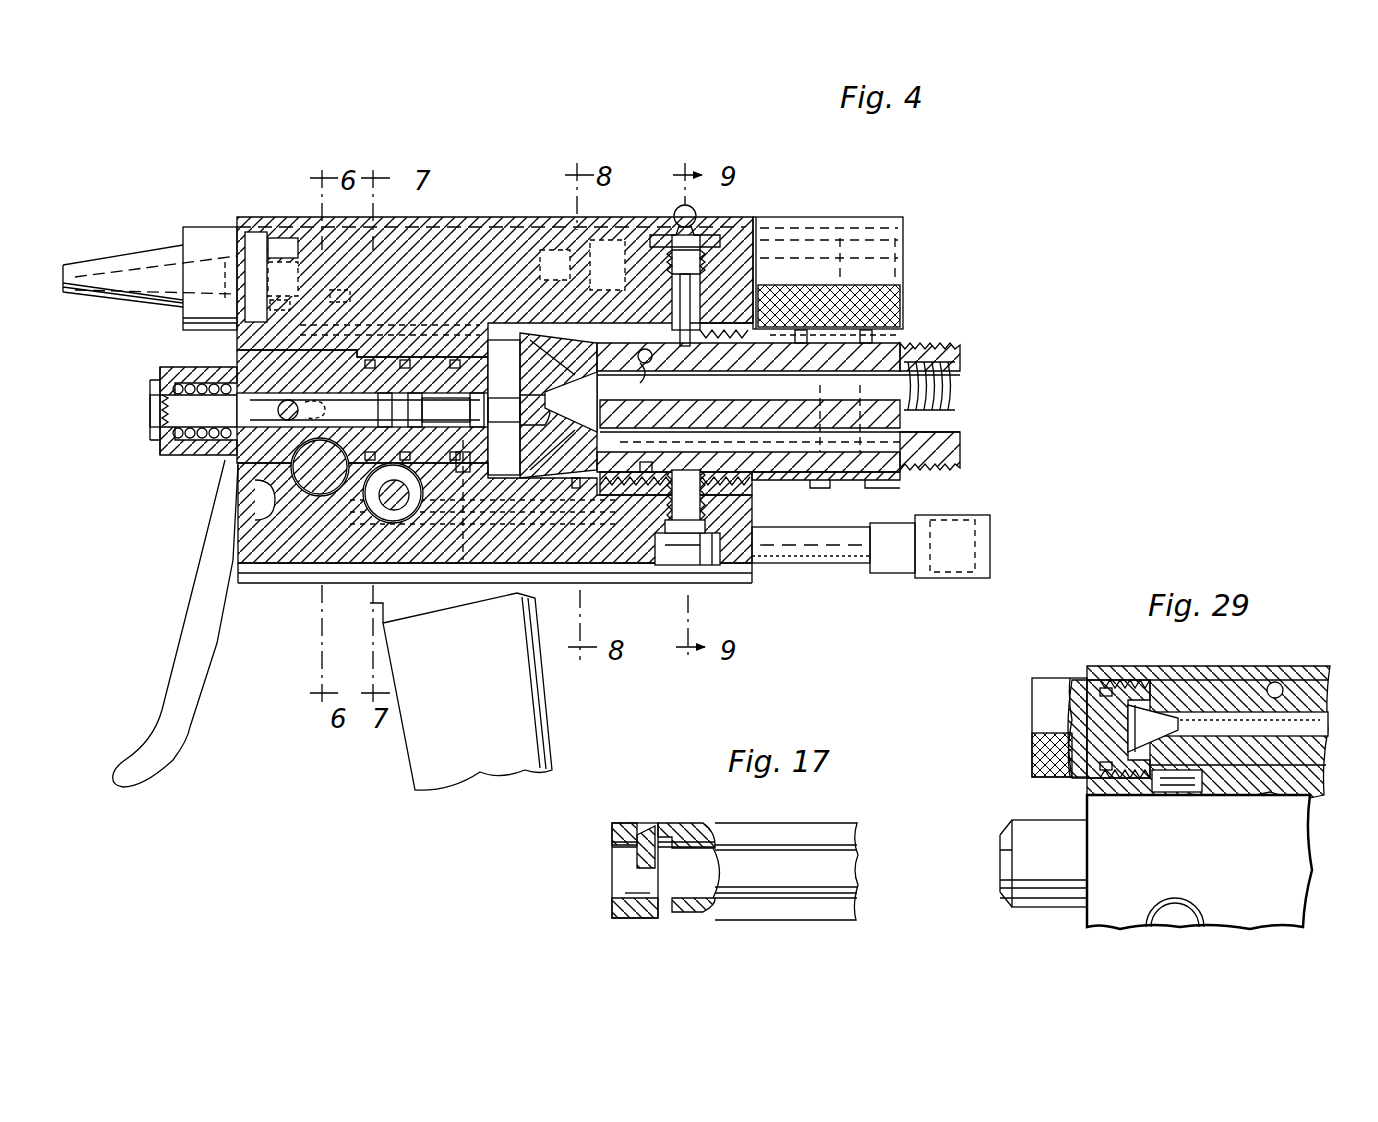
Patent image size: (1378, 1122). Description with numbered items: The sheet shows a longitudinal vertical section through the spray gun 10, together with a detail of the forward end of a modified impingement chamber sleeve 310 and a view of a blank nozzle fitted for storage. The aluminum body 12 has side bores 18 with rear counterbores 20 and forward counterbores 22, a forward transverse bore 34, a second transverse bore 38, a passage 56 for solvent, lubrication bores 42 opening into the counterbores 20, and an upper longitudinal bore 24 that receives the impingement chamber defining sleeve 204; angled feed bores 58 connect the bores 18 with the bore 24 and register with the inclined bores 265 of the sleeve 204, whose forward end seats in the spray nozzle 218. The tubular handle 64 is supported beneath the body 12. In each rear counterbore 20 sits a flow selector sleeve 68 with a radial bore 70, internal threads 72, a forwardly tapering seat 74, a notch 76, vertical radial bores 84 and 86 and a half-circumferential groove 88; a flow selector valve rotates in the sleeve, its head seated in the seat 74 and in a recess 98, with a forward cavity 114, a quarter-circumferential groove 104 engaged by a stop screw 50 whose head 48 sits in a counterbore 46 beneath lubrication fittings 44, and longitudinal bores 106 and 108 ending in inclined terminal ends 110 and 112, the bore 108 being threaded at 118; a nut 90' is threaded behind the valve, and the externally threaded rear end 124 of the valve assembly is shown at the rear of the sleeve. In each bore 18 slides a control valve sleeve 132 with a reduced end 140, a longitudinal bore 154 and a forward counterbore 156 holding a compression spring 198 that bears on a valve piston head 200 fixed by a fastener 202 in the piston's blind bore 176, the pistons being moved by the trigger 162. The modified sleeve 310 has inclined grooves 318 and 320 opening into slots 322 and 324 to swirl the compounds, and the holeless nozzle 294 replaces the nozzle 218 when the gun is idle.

In FIG. 4, the spray gun 10 is at (452, 212).
In FIG. 4, the body 12 is at (497, 217).
In FIG. 29, the body 12 is at (1292, 848).
In FIG. 4, the bores 18 is at (463, 465).
In FIG. 4, the counterbores 20 is at (756, 490).
In FIG. 4, the counterbores 22 is at (246, 503).
In FIG. 29, the longitudinal bore 24 is at (1278, 688).
In FIG. 4, the forward transverse bore 34 is at (290, 520).
In FIG. 4, the second transverse bore 38 is at (365, 520).
In FIG. 4, the lubrication bores 42 is at (760, 233).
In FIG. 4, the lubrication fittings 44 is at (700, 235).
In FIG. 4, the counterbores 46 is at (645, 566).
In FIG. 4, the head portions 48 is at (706, 567).
In FIG. 4, the stop screws 50 is at (670, 567).
In FIG. 4, the passage 56 is at (598, 566).
In FIG. 4, the feed bores 58 is at (338, 299).
In FIG. 29, the feed bores 58 is at (1210, 798).
In FIG. 4, the tubular handle 64 is at (422, 765).
In FIG. 4, the flow selector sleeves 68 is at (640, 478).
In FIG. 4, the radial bores 70 is at (676, 503).
In FIG. 4, the internal threads 72 is at (770, 492).
In FIG. 4, the forwardly tapering seats 74 is at (520, 510).
In FIG. 4, the notches 76 is at (488, 335).
In FIG. 4, the vertical radial bore 84 is at (575, 343).
In FIG. 4, the vertical radial bore 86 is at (580, 488).
In FIG. 4, the circumferential grooves 88 is at (560, 520).
In FIG. 4, the nut 90' is at (847, 493).
In FIG. 4, the central recesses 98 is at (659, 363).
In FIG. 4, the circumferential grooves 104 is at (700, 455).
In FIG. 4, the longitudinal bore 106 is at (958, 440).
In FIG. 4, the longitudinal bore 108 is at (865, 400).
In FIG. 4, the terminal end 110 is at (580, 458).
In FIG. 4, the terminal end 112 is at (585, 362).
In FIG. 4, the cavity 114 is at (522, 420).
In FIG. 4, the internal threads 118 is at (963, 385).
In FIG. 4, the external thread 124 is at (920, 348).
In FIG. 4, the control valve sleeves 132 is at (200, 372).
In FIG. 4, the reduced end portions 140 is at (455, 478).
In FIG. 4, the longitudinal bores 154 is at (365, 404).
In FIG. 4, the counterbores 156 is at (180, 452).
In FIG. 4, the trigger 162 is at (193, 640).
In FIG. 4, the blind threaded bore 176 is at (222, 458).
In FIG. 4, the compression spring 198 is at (222, 370).
In FIG. 4, the valve piston head 200 is at (160, 383).
In FIG. 4, the fastener 202 is at (150, 412).
In FIG. 29, the impingement chamber defining sleeve 204 is at (1208, 700).
In FIG. 4, the spray nozzle 218 is at (165, 258).
In FIG. 29, the inclined bores 265 is at (1150, 725).
In FIG. 29, the holeless nozzle 294 is at (1040, 725).
In FIG. 17, the impingement chamber defining sleeve 310 is at (810, 840).
In FIG. 17, the groove 318 is at (668, 832).
In FIG. 17, the groove 320 is at (662, 915).
In FIG. 17, the circumferential slot 322 is at (632, 858).
In FIG. 17, the circumferential slot 324 is at (645, 898).